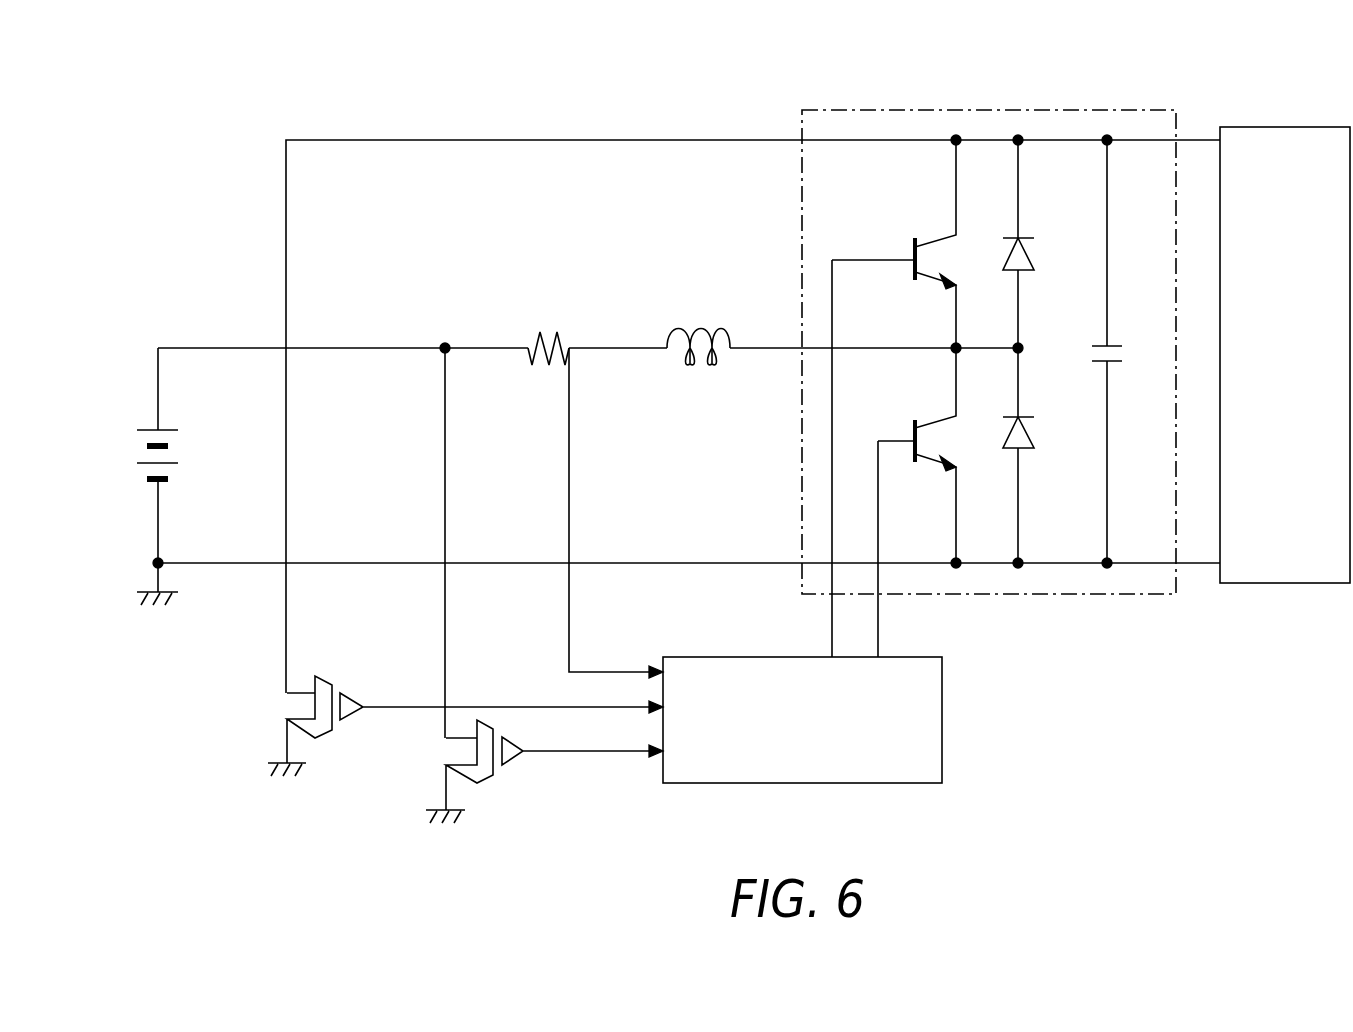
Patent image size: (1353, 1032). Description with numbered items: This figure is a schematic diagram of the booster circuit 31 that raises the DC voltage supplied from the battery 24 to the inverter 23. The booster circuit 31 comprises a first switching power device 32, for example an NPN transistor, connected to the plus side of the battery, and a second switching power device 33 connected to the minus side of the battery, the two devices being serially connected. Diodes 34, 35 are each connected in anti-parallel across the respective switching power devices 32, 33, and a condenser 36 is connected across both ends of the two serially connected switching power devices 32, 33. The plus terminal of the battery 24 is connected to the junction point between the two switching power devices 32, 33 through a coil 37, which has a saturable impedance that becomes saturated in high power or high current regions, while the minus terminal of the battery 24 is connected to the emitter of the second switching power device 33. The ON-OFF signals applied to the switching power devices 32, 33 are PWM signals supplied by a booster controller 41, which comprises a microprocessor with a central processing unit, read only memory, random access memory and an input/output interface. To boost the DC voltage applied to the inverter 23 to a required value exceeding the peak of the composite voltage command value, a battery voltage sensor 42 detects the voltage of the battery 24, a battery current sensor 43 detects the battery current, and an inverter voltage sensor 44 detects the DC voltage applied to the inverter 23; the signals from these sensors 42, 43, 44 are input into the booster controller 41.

The inverter 23 is at (1255, 140).
The battery 24 is at (135, 455).
The booster circuit 31 is at (1042, 110).
The first switching power device 32 is at (955, 262).
The second switching power device 33 is at (952, 442).
The diode 34 is at (1034, 256).
The diode 35 is at (1035, 430).
The condenser 36 is at (1125, 352).
The coil 37 is at (700, 322).
The booster controller 41 is at (925, 704).
The battery voltage sensor 42 is at (507, 775).
The battery current sensor 43 is at (553, 322).
The inverter voltage sensor 44 is at (341, 725).